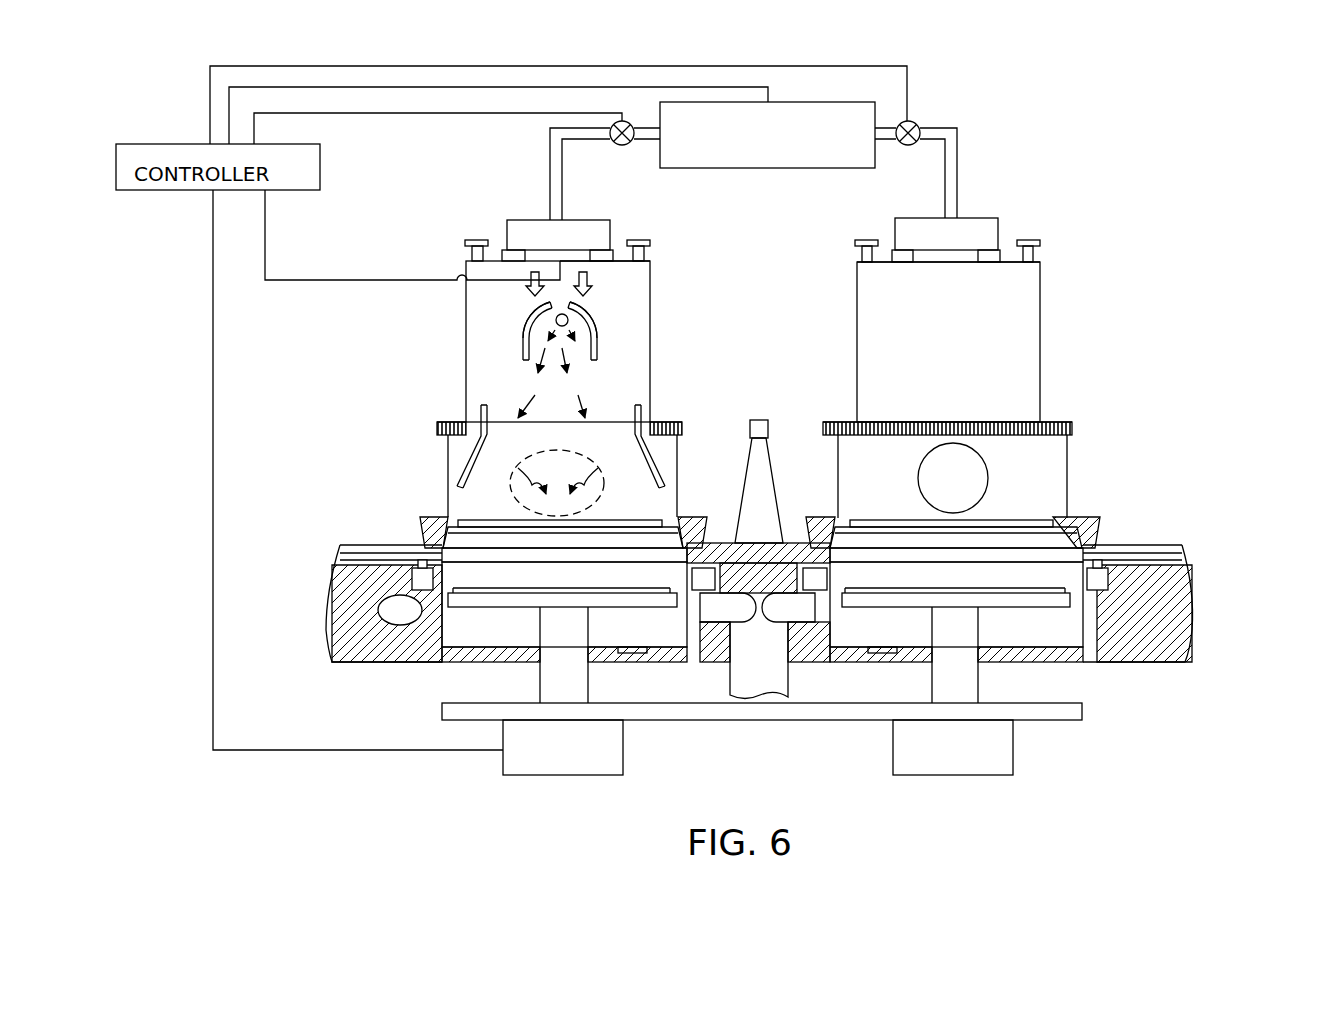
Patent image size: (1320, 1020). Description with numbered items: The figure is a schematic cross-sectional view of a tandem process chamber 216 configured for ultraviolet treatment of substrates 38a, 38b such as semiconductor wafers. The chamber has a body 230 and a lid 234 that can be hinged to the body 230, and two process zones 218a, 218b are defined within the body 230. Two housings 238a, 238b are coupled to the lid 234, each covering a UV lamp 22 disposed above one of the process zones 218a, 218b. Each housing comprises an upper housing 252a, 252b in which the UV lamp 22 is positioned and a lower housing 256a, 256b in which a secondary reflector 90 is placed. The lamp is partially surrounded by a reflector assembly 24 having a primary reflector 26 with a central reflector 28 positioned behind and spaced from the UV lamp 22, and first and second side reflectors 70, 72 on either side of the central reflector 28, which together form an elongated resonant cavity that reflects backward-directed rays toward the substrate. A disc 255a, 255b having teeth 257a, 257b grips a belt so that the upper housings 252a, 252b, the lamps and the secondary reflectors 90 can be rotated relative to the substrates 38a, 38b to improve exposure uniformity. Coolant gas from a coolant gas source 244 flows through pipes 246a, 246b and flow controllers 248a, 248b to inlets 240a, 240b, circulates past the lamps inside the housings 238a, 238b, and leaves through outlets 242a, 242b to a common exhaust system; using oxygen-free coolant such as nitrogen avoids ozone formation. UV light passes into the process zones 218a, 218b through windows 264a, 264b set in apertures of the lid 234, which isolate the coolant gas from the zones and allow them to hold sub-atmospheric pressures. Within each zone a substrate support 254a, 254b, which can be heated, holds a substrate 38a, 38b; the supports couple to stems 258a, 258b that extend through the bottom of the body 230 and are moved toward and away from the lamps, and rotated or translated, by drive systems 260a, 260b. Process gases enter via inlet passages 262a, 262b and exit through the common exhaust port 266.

The tandem process chamber 216 is at (995, 95).
The coolant gas source 244 is at (768, 168).
The flow controller 248a is at (632, 145).
The flow controller 248b is at (898, 145).
The pipe 246a is at (550, 180).
The pipe 246b is at (962, 145).
The inlet 240a is at (604, 218).
The inlet 240b is at (1000, 198).
The housing 238a is at (458, 270).
The housing 238b is at (1047, 268).
The reflector assembly 24 is at (630, 290).
The primary reflector 26 is at (530, 314).
The central reflector 28 is at (570, 300).
The UV lamp 22 is at (567, 330).
The first side reflector 70 is at (523, 350).
The second side reflector 72 is at (597, 350).
The secondary reflector 90 is at (630, 408).
The upper housing 252a is at (466, 310).
The upper housing 252b is at (1040, 328).
The disc 255a is at (458, 422).
The disc 255b is at (1082, 395).
The teeth 257a is at (437, 430).
The teeth 257b is at (1072, 430).
The lower housing 256a is at (448, 467).
The lower housing 256b is at (1067, 460).
The outlet 242a is at (513, 503).
The outlet 242b is at (977, 492).
The window 264a is at (640, 520).
The window 264b is at (1050, 520).
The lid 234 is at (793, 543).
The process zone 218a is at (467, 573).
The process zone 218b is at (1062, 573).
The inlet passage 262a is at (340, 553).
The inlet passage 262b is at (1183, 553).
The body 230 is at (1182, 635).
The substrate 38a is at (483, 585).
The substrate 38b is at (1048, 585).
The stem 258a is at (545, 683).
The stem 258b is at (975, 683).
The substrate support 254a is at (602, 600).
The substrate support 254b is at (915, 600).
The drive system 260a is at (625, 750).
The drive system 260b is at (1015, 750).
The common exhaust port 266 is at (738, 640).